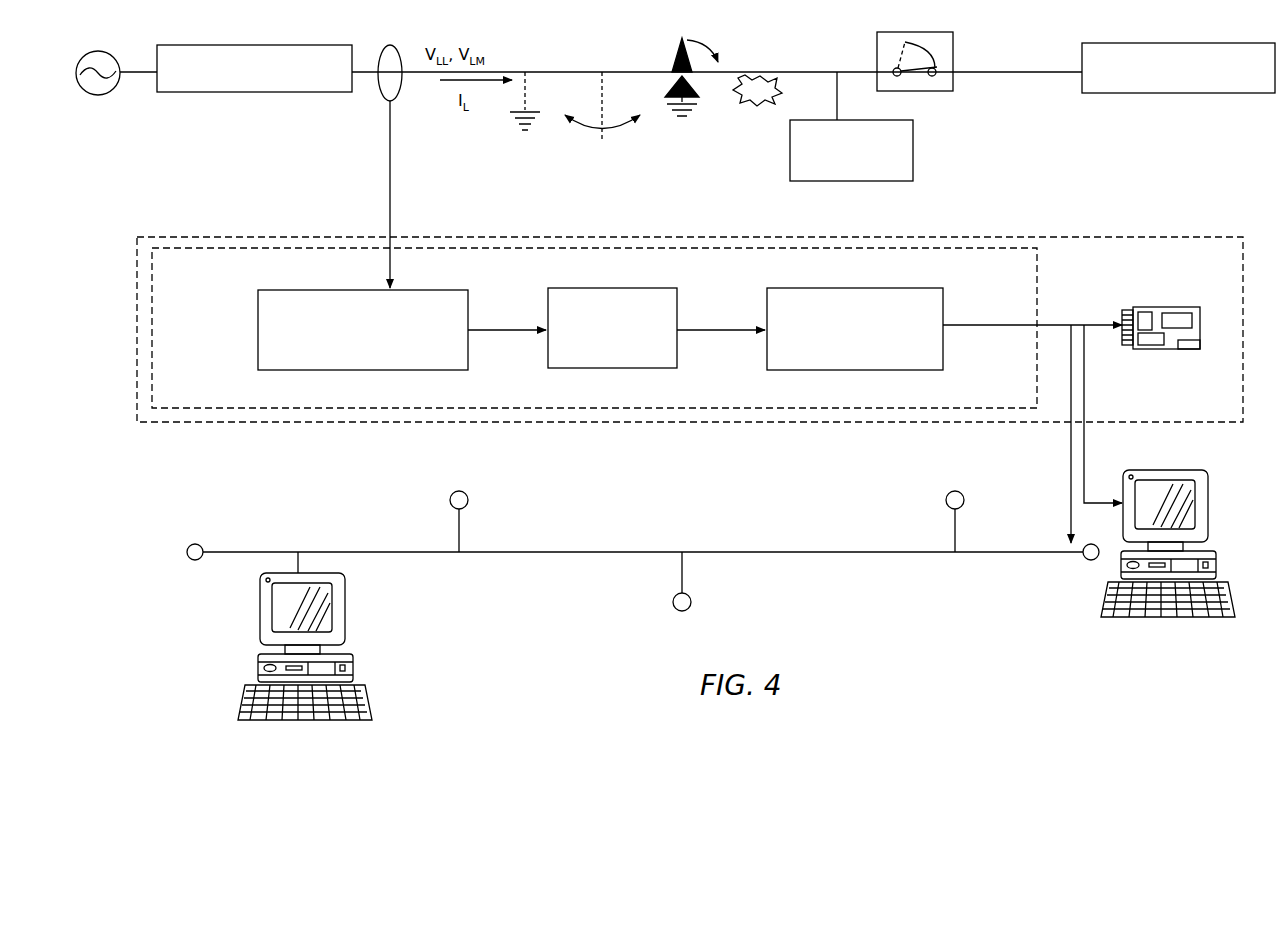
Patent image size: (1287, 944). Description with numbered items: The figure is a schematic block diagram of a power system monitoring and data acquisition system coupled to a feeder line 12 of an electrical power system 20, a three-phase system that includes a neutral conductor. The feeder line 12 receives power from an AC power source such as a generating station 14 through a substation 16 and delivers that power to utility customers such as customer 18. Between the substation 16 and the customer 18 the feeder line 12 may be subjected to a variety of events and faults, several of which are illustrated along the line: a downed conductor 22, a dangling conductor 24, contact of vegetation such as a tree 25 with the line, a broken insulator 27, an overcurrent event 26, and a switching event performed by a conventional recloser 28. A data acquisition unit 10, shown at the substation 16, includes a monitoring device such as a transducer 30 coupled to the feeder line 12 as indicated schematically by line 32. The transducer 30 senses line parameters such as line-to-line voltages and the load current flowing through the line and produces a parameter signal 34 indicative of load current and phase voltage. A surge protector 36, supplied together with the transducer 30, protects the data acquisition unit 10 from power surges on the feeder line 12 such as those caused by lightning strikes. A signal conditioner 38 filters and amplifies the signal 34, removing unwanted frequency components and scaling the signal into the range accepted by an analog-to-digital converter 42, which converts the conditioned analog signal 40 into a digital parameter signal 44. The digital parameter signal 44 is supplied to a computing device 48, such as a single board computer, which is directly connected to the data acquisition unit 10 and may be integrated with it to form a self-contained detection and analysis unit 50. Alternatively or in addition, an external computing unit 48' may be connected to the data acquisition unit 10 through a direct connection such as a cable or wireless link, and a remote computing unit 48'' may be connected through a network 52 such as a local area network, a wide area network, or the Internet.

The data acquisition unit 10 is at (1037, 285).
The feeder line 12 is at (370, 75).
The generating station 14 is at (96, 96).
The substation 16 is at (192, 96).
The customer 18 is at (1130, 95).
The power system 20 is at (200, 176).
The downed conductor 22 is at (510, 100).
The dangling conductor 24 is at (598, 138).
The tree 25 is at (672, 48).
The overcurrent event 26 is at (913, 175).
The broken insulator 27 is at (758, 112).
The recloser 28 is at (923, 92).
The transducer 30 is at (316, 330).
The line 32 is at (388, 168).
The signal 34 is at (510, 333).
The surge protector 36 is at (258, 342).
The signal conditioner 38 is at (610, 288).
The conditioned signal 40 is at (740, 333).
The analog-to-digital converter 42 is at (805, 370).
The digital parameter signal 44 is at (972, 325).
The computing device 48 is at (1175, 302).
The external computing unit 48' is at (1189, 543).
The remote computing unit 48'' is at (281, 636).
The detection and analysis unit 50 is at (278, 422).
The network 52 is at (713, 572).